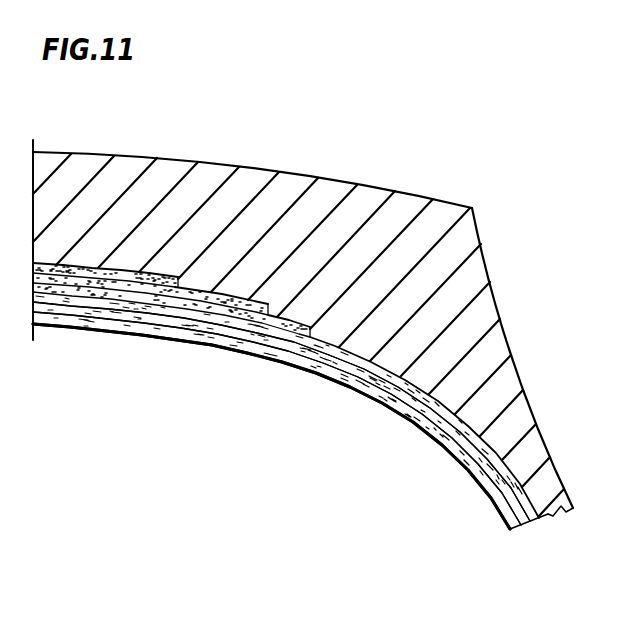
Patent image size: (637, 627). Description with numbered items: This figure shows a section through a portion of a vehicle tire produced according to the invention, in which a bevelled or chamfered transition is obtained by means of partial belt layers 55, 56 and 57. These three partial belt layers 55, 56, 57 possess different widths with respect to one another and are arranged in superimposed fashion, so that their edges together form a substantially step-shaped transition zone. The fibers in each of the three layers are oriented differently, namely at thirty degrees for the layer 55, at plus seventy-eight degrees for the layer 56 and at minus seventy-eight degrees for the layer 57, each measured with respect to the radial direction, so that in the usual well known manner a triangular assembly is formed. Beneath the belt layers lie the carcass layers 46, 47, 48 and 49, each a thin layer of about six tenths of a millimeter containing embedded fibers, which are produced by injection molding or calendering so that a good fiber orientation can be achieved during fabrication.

The carcass layer 46 is at (372, 403).
The carcass layer 47 is at (417, 430).
The carcass layer 48 is at (460, 458).
The carcass layer 49 is at (502, 508).
The partial belt layer 55 is at (147, 273).
The partial belt layer 56 is at (196, 288).
The partial belt layer 57 is at (249, 302).